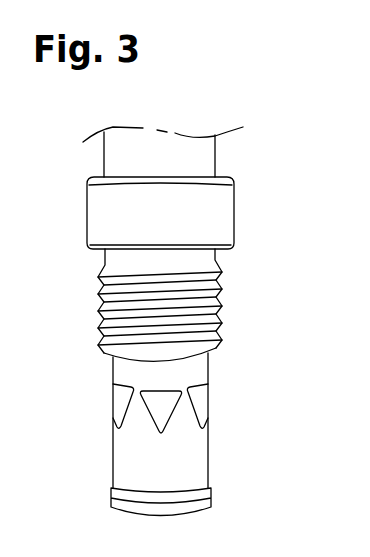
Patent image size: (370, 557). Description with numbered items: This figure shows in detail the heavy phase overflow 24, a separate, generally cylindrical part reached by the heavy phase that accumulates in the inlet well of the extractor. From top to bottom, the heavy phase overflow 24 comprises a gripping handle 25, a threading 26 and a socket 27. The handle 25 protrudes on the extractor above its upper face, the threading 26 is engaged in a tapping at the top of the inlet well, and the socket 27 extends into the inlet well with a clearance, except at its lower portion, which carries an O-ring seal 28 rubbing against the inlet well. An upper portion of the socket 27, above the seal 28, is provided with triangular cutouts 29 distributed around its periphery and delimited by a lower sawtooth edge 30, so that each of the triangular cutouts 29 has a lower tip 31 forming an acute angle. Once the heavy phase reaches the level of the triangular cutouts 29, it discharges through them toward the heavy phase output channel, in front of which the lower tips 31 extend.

The heavy phase overflow 24 is at (245, 380).
The gripping handle 25 is at (210, 220).
The threading 26 is at (223, 307).
The socket 27 is at (210, 460).
The O-ring seal 28 is at (212, 494).
The triangular cutouts 29 is at (84, 402).
The lower sawtooth edge 30 is at (152, 422).
The lower tip 31 is at (162, 436).